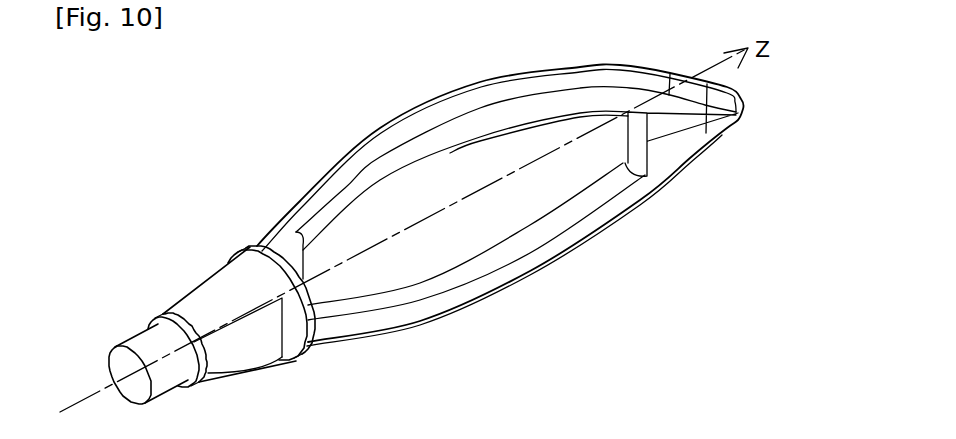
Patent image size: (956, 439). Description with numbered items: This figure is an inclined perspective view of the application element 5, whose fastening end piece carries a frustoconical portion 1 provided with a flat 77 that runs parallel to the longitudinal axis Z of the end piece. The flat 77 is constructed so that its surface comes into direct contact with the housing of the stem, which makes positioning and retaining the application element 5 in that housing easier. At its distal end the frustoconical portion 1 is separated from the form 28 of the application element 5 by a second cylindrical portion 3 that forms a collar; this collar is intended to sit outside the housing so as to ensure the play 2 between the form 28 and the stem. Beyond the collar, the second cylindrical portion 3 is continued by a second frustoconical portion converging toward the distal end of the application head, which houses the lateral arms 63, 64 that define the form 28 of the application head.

The frustoconical portion 1 is at (215, 320).
The play 2 is at (142, 348).
The second cylindrical portion 3 is at (250, 246).
The application element 5 is at (500, 195).
The form 28 is at (490, 88).
The lateral arm 63 is at (400, 133).
The lateral arm 64 is at (563, 243).
The flat 77 is at (253, 343).